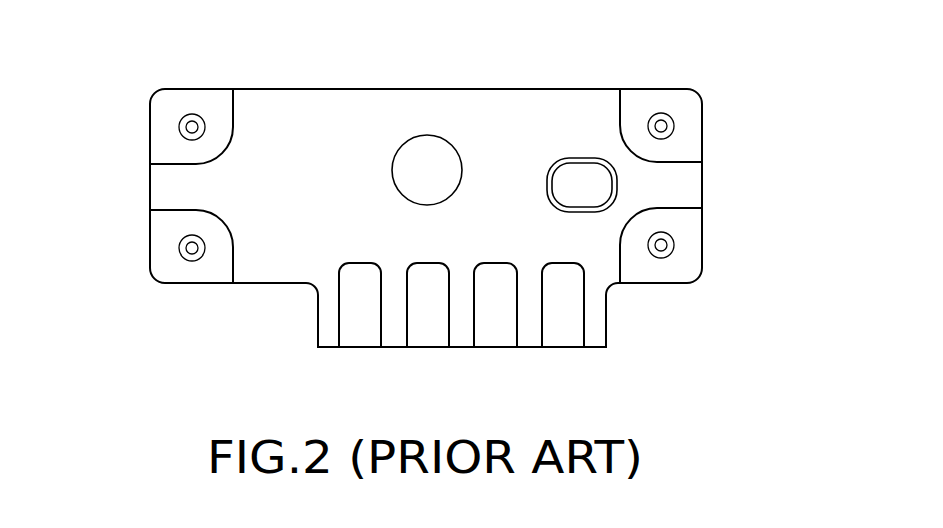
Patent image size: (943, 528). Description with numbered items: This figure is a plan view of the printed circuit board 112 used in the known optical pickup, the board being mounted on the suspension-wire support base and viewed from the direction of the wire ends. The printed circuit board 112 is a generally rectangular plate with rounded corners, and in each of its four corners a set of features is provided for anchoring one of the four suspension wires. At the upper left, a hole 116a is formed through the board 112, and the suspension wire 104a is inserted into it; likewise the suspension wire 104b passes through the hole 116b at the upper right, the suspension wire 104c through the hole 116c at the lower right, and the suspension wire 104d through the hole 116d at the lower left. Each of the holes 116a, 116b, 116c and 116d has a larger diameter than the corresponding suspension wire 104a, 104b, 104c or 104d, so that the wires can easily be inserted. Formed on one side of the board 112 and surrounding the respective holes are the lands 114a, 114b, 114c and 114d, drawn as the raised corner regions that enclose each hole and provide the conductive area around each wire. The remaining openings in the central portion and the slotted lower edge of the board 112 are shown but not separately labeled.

The printed circuit board 112 is at (428, 90).
The suspension wire 104a is at (200, 119).
The suspension wire 104b is at (653, 114).
The suspension wire 104c is at (655, 257).
The suspension wire 104d is at (200, 259).
The land 114a is at (150, 128).
The land 114b is at (702, 122).
The land 114c is at (695, 220).
The land 114d is at (160, 222).
The hole 116a is at (180, 134).
The hole 116b is at (672, 133).
The hole 116c is at (672, 252).
The hole 116d is at (180, 254).